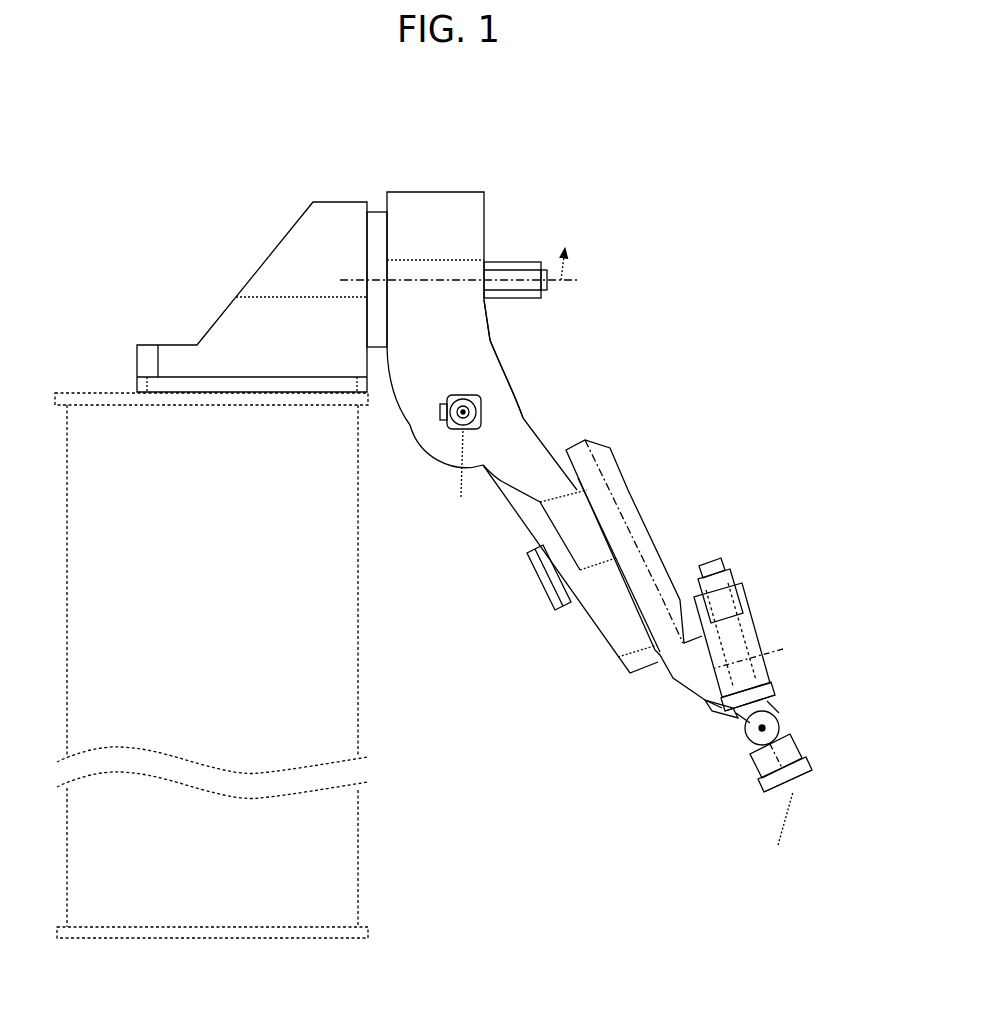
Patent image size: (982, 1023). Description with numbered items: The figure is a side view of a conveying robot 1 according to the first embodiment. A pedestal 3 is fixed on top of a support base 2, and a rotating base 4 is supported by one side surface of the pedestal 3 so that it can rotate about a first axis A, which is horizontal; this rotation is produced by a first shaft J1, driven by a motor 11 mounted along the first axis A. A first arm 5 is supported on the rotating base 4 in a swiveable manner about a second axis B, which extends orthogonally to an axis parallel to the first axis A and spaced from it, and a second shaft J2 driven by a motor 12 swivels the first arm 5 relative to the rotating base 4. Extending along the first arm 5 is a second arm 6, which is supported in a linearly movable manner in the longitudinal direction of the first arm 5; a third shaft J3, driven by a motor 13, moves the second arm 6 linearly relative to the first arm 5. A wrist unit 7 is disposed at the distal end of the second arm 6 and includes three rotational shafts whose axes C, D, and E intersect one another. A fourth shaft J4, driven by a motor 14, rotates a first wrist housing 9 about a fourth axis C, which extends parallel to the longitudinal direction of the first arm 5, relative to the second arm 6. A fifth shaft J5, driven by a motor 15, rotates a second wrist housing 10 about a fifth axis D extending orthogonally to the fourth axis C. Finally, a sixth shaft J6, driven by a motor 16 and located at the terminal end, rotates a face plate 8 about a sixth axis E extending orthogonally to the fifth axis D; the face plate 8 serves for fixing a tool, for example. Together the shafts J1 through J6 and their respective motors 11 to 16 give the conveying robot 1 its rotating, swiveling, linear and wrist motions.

The conveying robot 1 is at (638, 160).
The support base 2 is at (84, 392).
The pedestal 3 is at (272, 252).
The rotating base 4 is at (433, 192).
The first arm 5 is at (540, 430).
The second arm 6 is at (627, 489).
The wrist unit 7 is at (820, 741).
The face plate 8 is at (803, 780).
The first wrist housing 9 is at (723, 707).
The second wrist housing 10 is at (752, 764).
The motor 11 is at (516, 262).
The motor 12 is at (444, 421).
The motor 13 is at (540, 590).
The motor 14 is at (733, 572).
The motor 15 is at (748, 602).
The motor 16 is at (748, 602).
The first shaft J1 is at (376, 175).
The second shaft J2 is at (510, 374).
The third shaft J3 is at (660, 668).
The fourth shaft J4 is at (773, 680).
The fifth shaft J5 is at (783, 716).
The sixth shaft J6 is at (770, 800).
The first axis A is at (460, 249).
The second axis B is at (461, 477).
The fourth axis C is at (758, 649).
The fifth axis D is at (754, 734).
The sixth axis E is at (778, 830).